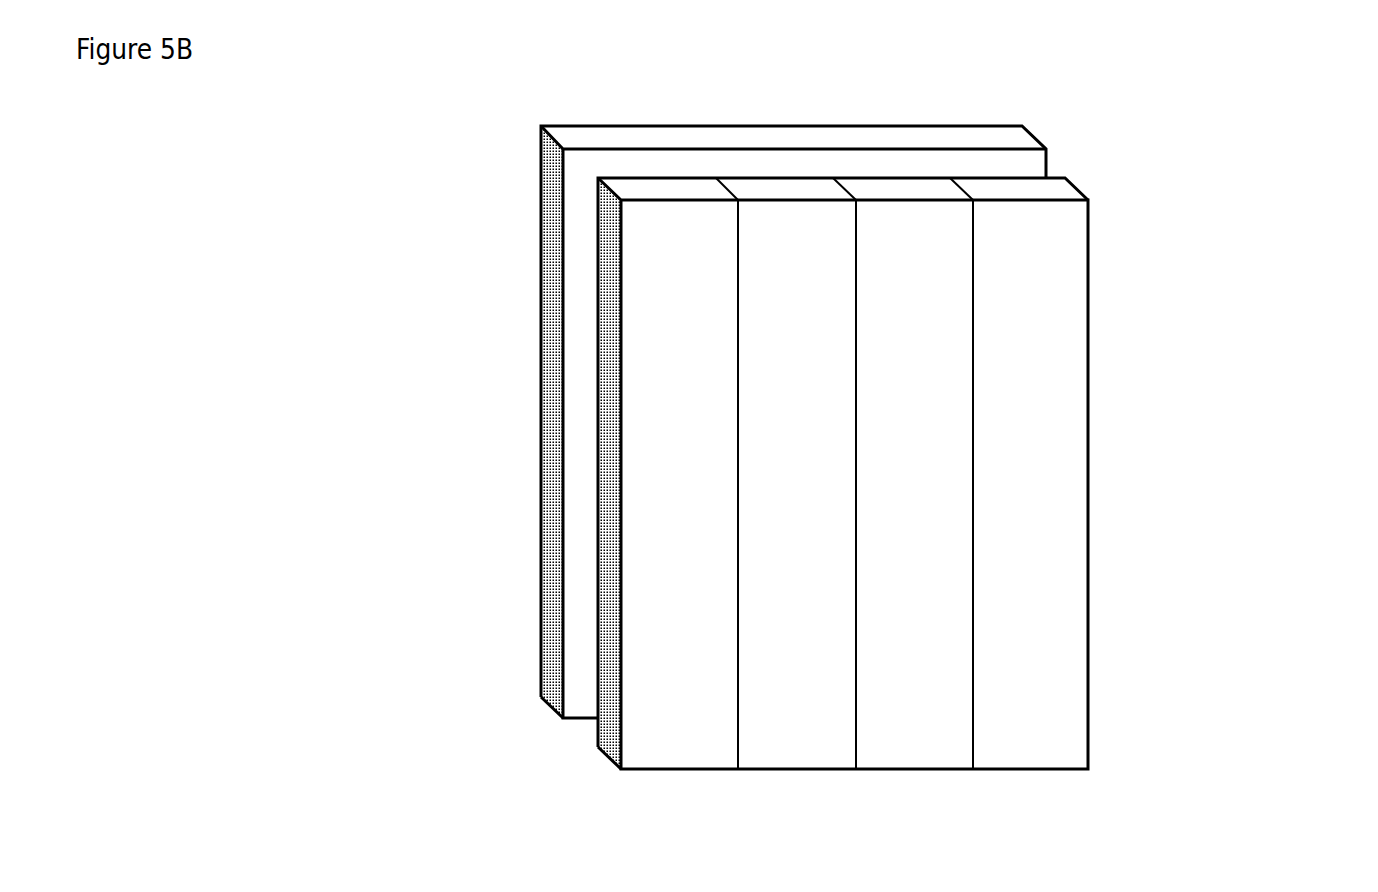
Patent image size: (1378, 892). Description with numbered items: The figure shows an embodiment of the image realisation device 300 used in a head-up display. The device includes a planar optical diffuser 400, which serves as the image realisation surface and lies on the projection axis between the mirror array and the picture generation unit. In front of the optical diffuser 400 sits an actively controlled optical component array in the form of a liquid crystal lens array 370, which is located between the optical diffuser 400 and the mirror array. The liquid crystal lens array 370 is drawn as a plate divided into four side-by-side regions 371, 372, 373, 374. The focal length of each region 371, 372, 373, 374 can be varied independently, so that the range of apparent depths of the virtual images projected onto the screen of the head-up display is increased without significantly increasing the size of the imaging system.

The image realisation device 300 is at (1257, 112).
The optical diffuser 400 is at (1022, 127).
The liquid crystal lens array 370 is at (899, 484).
The region 371 is at (653, 756).
The region 372 is at (785, 756).
The region 373 is at (898, 756).
The region 374 is at (1040, 756).